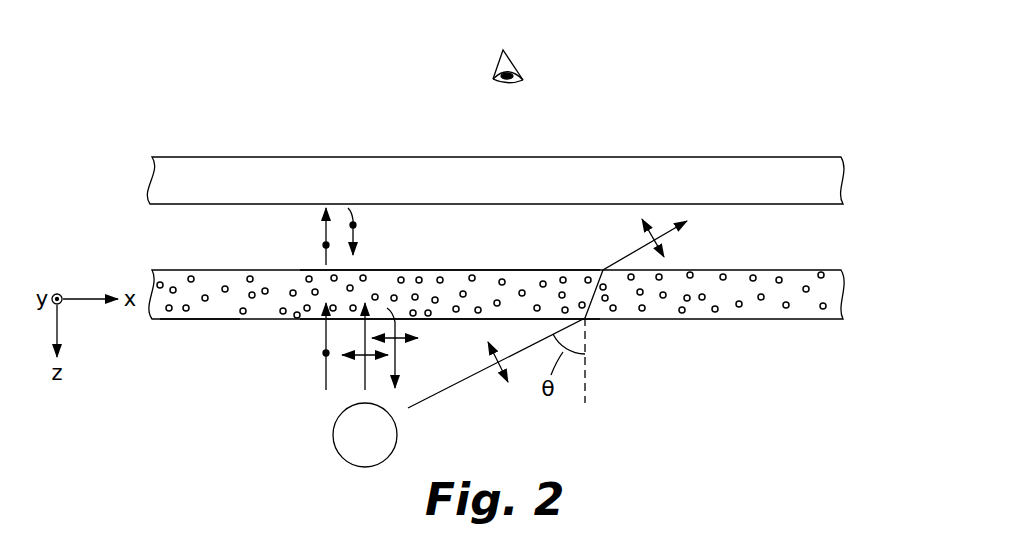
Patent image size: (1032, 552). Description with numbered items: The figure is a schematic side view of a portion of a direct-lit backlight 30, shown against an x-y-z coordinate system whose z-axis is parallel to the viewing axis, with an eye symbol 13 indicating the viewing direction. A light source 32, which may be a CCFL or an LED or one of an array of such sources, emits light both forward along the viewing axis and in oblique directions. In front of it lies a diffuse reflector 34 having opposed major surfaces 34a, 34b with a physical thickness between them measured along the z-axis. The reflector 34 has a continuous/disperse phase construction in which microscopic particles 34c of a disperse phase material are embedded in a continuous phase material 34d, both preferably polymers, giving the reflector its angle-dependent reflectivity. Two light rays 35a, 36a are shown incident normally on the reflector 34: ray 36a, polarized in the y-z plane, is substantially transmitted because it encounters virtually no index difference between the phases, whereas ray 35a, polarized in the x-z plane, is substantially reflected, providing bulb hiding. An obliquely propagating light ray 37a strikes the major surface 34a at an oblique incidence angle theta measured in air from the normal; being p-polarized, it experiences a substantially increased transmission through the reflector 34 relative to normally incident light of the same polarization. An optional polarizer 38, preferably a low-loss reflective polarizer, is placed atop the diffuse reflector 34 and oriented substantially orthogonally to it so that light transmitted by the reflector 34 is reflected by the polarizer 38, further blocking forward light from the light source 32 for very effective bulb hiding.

The viewer eye 13 is at (510, 62).
The direct-lit backlight 30 is at (708, 100).
The light source 32 is at (352, 448).
The diffuse reflector 34 is at (843, 292).
The first major surface 34a is at (765, 319).
The second major surface 34b is at (797, 268).
The particles of disperse phase material 34c is at (205, 295).
The continuous phase material 34d is at (203, 307).
The light ray 35a is at (362, 385).
The light ray 36a is at (325, 372).
The obliquely propagating light ray 37a is at (430, 400).
The polarizer 38 is at (824, 164).